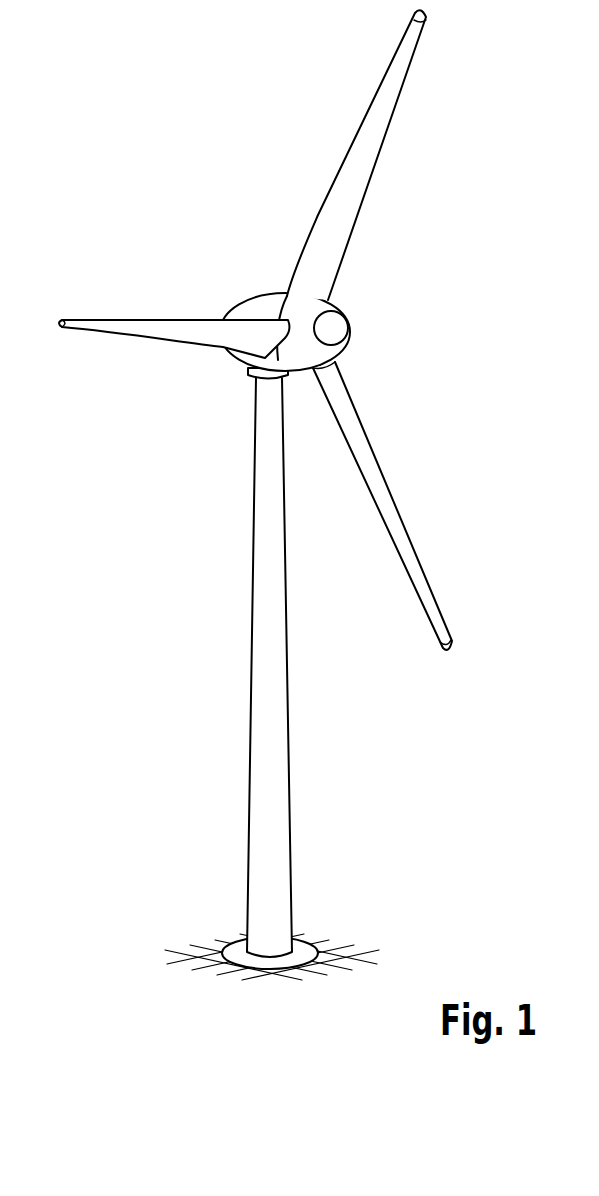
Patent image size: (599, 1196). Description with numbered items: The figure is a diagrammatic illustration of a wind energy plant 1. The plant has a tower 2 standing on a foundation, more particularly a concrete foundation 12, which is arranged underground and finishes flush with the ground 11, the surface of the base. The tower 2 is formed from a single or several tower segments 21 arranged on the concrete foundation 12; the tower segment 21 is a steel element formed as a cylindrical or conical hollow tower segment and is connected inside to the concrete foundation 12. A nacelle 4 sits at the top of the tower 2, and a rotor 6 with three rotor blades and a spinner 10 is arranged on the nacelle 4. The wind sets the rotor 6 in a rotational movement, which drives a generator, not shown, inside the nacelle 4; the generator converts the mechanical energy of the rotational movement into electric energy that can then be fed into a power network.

The wind energy plant 1 is at (124, 96).
The tower 2 is at (267, 667).
The nacelle 4 is at (253, 304).
The rotor 6 is at (279, 330).
The spinner 10 is at (341, 331).
The ground 11 is at (360, 954).
The concrete foundation 12 is at (232, 948).
The tower segment 21 is at (265, 658).